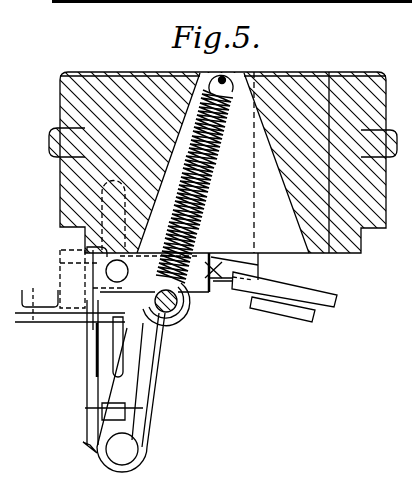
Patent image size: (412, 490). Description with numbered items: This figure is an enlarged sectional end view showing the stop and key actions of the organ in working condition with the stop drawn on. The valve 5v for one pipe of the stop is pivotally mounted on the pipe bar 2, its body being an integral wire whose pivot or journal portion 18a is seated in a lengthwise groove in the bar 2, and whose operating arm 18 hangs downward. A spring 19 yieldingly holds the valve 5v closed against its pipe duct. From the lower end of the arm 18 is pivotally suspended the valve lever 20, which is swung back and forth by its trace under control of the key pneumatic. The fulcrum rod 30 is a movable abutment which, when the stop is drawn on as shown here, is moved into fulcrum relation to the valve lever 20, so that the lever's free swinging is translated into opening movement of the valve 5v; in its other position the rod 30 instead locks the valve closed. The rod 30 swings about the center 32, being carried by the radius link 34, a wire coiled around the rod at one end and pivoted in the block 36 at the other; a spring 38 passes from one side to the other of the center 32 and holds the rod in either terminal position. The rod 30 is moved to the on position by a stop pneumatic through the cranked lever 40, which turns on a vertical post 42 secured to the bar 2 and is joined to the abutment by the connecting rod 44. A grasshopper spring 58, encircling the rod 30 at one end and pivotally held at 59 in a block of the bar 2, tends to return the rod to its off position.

The bar 2 is at (339, 78).
The spring 38 is at (212, 186).
The pivot or journal portion 18a is at (200, 256).
The center of swinging movement 32 is at (258, 265).
The block 36 is at (211, 273).
The valve 5v is at (337, 305).
The radius link 34 is at (215, 265).
The fulcrum rod 30 is at (190, 318).
The spring 19 is at (85, 258).
The pivot 59 is at (106, 283).
The connecting rod 44 is at (67, 334).
The operating arm 18 is at (112, 357).
The valve lever 20 is at (102, 413).
The cranked lever 40 is at (100, 381).
The spring 58 is at (147, 420).
The vertical post 42 is at (142, 440).